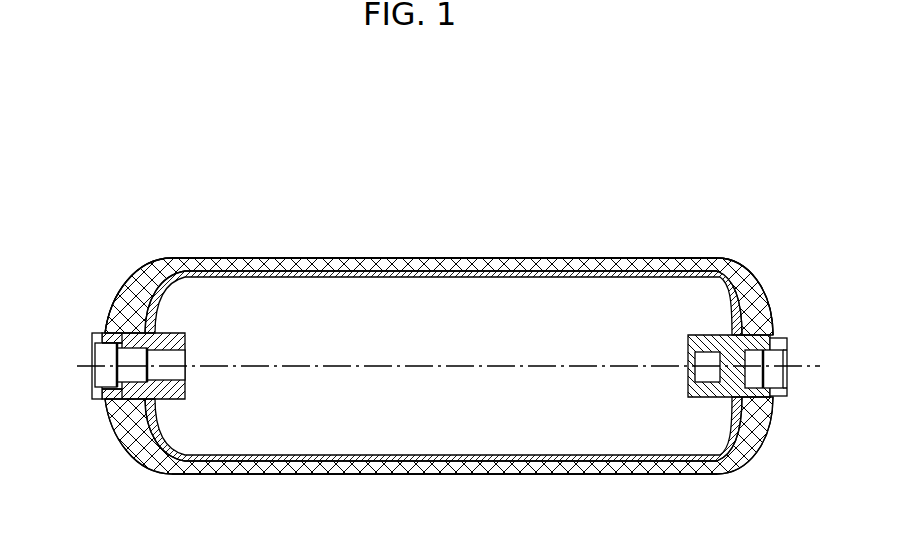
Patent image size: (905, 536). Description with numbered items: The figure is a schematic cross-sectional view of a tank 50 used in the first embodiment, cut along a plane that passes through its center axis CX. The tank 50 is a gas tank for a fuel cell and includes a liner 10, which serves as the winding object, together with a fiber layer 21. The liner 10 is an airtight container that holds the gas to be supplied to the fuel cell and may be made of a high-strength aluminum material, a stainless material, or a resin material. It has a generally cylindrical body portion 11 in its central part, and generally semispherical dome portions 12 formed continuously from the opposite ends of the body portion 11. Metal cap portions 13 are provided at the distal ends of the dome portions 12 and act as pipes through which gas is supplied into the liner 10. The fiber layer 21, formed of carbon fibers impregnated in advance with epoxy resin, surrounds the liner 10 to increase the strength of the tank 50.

The tank 50 is at (670, 190).
The liner 10 is at (330, 465).
The body portion 11 is at (397, 250).
The dome portions 12 is at (745, 270).
The cap portions 13 is at (98, 400).
The fiber layer 21 is at (402, 463).
The center axis CX is at (432, 364).